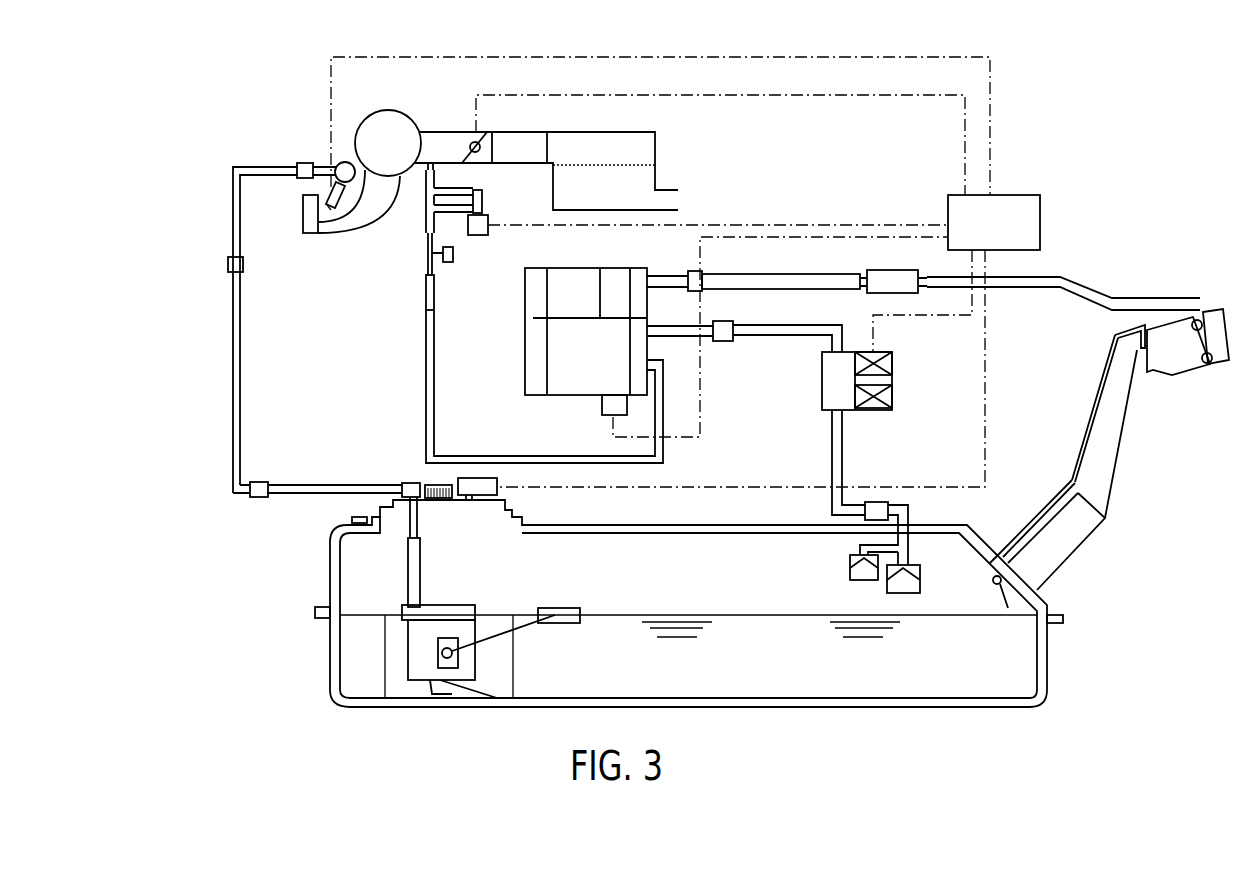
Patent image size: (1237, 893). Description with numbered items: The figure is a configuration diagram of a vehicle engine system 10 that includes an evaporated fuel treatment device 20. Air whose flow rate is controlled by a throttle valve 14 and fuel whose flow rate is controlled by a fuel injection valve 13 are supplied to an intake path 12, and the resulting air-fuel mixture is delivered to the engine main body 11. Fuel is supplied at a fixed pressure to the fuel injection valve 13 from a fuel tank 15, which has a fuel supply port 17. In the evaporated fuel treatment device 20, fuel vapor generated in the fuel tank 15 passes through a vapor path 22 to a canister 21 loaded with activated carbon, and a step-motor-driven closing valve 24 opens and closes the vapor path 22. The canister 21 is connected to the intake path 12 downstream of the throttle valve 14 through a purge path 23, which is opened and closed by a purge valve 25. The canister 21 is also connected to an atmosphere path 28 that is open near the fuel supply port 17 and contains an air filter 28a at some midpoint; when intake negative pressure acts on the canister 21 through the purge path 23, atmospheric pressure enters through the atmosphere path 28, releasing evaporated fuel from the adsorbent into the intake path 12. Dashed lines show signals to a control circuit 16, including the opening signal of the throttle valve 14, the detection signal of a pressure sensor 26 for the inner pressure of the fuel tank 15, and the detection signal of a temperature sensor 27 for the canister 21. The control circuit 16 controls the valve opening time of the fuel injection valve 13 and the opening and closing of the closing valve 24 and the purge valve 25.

The vehicle engine system 10 is at (243, 128).
The engine main body 11 is at (310, 235).
The intake path 12 is at (360, 213).
The fuel injection valve 13 is at (342, 208).
The throttle valve 14 is at (467, 158).
The fuel tank 15 is at (1056, 655).
The control circuit 16 is at (1005, 193).
The fuel supply port 17 is at (1183, 362).
The evaporated fuel treatment device 20 is at (762, 212).
The canister 21 is at (525, 352).
The vapor path 22 is at (775, 333).
The purge path 23 is at (422, 183).
The closing valve 24 is at (867, 415).
The purge valve 25 is at (478, 230).
The pressure sensor 26 is at (480, 483).
The temperature sensor 27 is at (610, 402).
The atmosphere path 28 is at (793, 280).
The air filter 28a is at (892, 277).